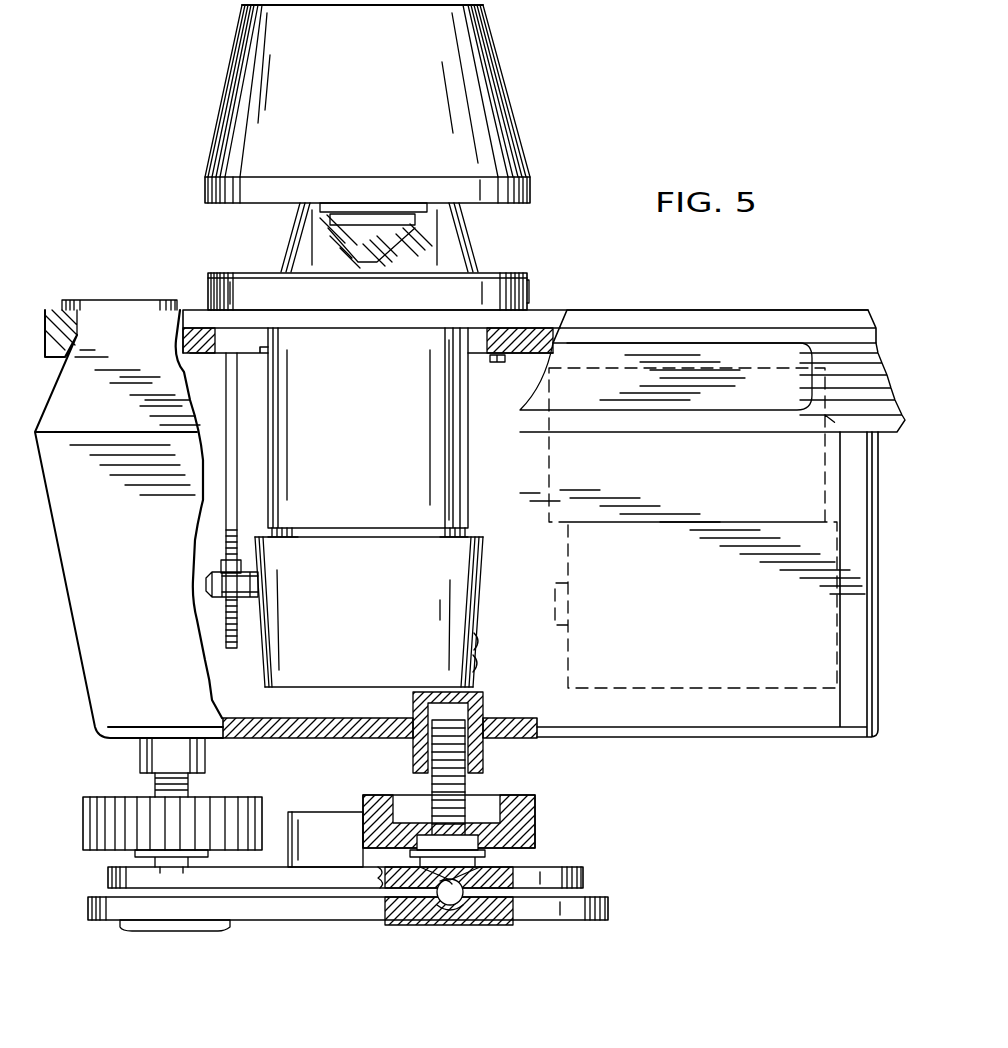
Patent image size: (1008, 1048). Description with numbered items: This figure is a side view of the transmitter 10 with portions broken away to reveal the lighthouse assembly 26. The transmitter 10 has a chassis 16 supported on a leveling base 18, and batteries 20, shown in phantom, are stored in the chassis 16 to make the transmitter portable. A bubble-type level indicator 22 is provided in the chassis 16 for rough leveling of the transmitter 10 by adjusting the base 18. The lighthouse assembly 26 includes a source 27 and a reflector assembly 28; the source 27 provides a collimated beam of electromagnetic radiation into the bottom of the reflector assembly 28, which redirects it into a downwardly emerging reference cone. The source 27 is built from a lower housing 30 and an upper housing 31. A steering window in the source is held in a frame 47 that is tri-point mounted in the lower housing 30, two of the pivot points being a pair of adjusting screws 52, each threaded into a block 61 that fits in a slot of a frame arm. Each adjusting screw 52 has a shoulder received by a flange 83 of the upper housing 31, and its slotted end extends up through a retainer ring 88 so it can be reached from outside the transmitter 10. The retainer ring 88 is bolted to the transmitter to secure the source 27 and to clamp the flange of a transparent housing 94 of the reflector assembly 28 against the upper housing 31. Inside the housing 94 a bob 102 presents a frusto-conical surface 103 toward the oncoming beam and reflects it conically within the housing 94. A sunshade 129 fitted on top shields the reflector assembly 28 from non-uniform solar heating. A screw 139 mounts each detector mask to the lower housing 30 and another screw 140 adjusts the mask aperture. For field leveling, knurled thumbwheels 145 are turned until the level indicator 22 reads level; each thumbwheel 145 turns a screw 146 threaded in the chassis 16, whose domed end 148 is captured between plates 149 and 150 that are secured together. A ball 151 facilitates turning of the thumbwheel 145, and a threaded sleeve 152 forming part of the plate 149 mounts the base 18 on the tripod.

The transmitter 10 is at (790, 301).
The chassis 16 is at (645, 283).
The leveling base 18 is at (388, 891).
The batteries 20 is at (825, 497).
The bubble-type level indicator 22 is at (112, 300).
The lighthouse assembly 26 is at (495, 232).
The source 27 is at (479, 392).
The reflector assembly 28 is at (290, 225).
The lower housing 30 is at (477, 610).
The upper housing 31 is at (468, 490).
The frame 47 is at (210, 573).
The adjusting screws 52 is at (225, 505).
The block 61 is at (225, 600).
The flange 83 is at (183, 306).
The retainer ring 88 is at (530, 292).
The housing 94 is at (470, 266).
The bob 102 is at (356, 250).
The frusto-conical surface 103 is at (338, 243).
The sunshade 129 is at (505, 80).
The screw 139 is at (478, 642).
The screw 140 is at (478, 665).
The knurled thumbwheels 145 is at (535, 803).
The screw 146 is at (475, 779).
The domed end 148 is at (475, 876).
The plate 149 is at (585, 876).
The plate 150 is at (610, 906).
The ball 151 is at (448, 915).
The threaded sleeve 152 is at (310, 812).